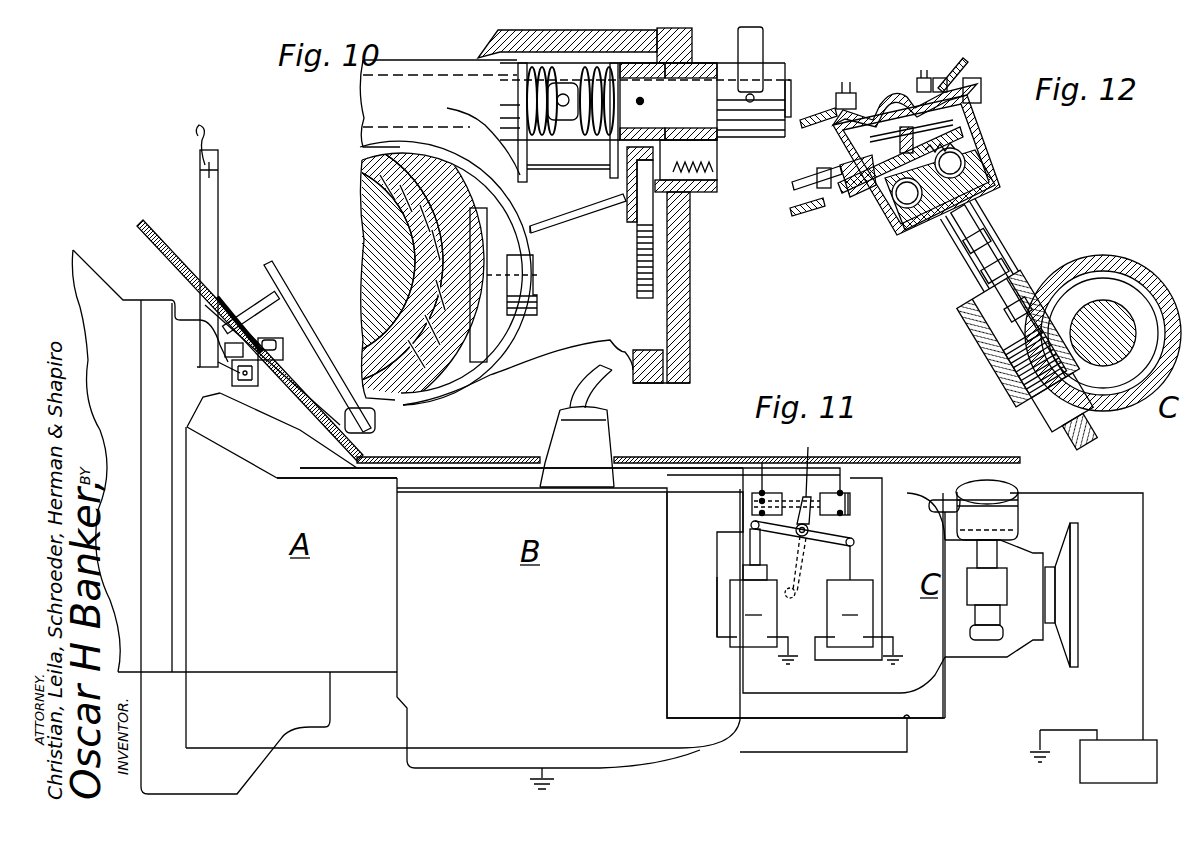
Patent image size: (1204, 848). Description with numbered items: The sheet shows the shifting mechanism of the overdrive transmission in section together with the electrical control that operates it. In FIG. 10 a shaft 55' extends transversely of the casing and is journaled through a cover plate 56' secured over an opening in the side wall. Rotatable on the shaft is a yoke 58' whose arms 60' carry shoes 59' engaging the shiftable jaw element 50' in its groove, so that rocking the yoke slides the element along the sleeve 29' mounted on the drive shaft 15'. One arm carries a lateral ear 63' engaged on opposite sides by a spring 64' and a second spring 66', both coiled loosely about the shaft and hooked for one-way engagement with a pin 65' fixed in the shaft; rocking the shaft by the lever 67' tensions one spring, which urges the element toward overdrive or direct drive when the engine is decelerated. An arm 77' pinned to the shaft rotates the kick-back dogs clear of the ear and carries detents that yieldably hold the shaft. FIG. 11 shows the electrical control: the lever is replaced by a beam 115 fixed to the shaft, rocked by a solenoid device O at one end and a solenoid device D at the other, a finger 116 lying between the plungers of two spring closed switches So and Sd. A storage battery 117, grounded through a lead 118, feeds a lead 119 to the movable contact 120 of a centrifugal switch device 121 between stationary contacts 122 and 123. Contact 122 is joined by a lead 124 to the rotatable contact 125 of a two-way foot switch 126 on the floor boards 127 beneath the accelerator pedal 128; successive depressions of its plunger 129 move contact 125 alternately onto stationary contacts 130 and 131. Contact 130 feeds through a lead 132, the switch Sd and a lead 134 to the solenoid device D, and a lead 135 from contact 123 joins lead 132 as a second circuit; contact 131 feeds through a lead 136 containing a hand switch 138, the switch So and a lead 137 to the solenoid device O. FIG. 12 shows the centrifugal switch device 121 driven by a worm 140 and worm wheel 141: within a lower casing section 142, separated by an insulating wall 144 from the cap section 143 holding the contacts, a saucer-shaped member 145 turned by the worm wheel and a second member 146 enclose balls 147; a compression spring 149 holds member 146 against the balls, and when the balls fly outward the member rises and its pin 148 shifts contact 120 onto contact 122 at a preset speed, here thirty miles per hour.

In FIG. 10, the yoke 58' is at (438, 90).
In FIG. 10, the spring 64' is at (552, 106).
In FIG. 10, the pin 65' is at (565, 86).
In FIG. 10, the second spring 66' is at (570, 116).
In FIG. 10, the lever 67' is at (768, 64).
In FIG. 10, the shaft 55' is at (645, 84).
In FIG. 10, the shiftable element 50' is at (315, 261).
In FIG. 10, the sleeve 29' is at (316, 261).
In FIG. 10, the drive shaft 15' is at (315, 261).
In FIG. 10, the arm 60' is at (471, 273).
In FIG. 10, the shoe 59' is at (512, 301).
In FIG. 10, the ear 63' is at (578, 217).
In FIG. 10, the arm 77' is at (624, 222).
In FIG. 10, the plate 56' is at (568, 272).
In FIG. 12, the worm 140 is at (1112, 278).
In FIG. 12, the worm wheel 141 is at (1017, 378).
In FIG. 12, the saucer-shaped member 145 is at (955, 240).
In FIG. 12, the centrifugal switch device 121 is at (1020, 177).
In FIG. 11, the centrifugal switch device 121 is at (1026, 525).
In FIG. 12, the balls 147 is at (985, 190).
In FIG. 12, the lower casing section 142 is at (995, 150).
In FIG. 12, the wall 144 is at (965, 126).
In FIG. 12, the compression spring 149 is at (975, 135).
In FIG. 12, the saucer-shaped member 146 is at (875, 215).
In FIG. 12, the movable contact 120 is at (888, 95).
In FIG. 11, the movable contact 120 is at (1000, 490).
In FIG. 12, the stationary contact 122 is at (848, 93).
In FIG. 12, the lead 119 is at (950, 66).
In FIG. 11, the lead 119 is at (1144, 586).
In FIG. 12, the cap section 143 is at (974, 78).
In FIG. 12, the stationary contact 123 is at (830, 180).
In FIG. 12, the pin 148 is at (868, 196).
In FIG. 11, the rotatable contact 125 is at (300, 371).
In FIG. 11, the floor boards 127 is at (443, 455).
In FIG. 11, the lead 136 is at (219, 225).
In FIG. 11, the hand switch 138 is at (207, 137).
In FIG. 11, the accelerator pedal 128 is at (282, 282).
In FIG. 11, the plunger 129 is at (285, 330).
In FIG. 11, the two-way foot switch 126 is at (300, 348).
In FIG. 11, the stationary contact 130 is at (227, 355).
In FIG. 11, the stationary contact 131 is at (252, 380).
In FIG. 11, the lead 132 is at (355, 480).
In FIG. 11, the spring closed switch Sd is at (750, 508).
In FIG. 11, the spring closed switch So is at (850, 508).
In FIG. 11, the finger 116 is at (808, 508).
In FIG. 11, the beam 115 is at (816, 545).
In FIG. 11, the solenoid device D is at (753, 613).
In FIG. 11, the solenoid device O is at (850, 613).
In FIG. 11, the lead 134 is at (717, 578).
In FIG. 11, the lead 137 is at (884, 553).
In FIG. 11, the lead 124 is at (542, 762).
In FIG. 11, the lead 135 is at (947, 694).
In FIG. 11, the lead 118 is at (1052, 729).
In FIG. 11, the storage battery 117 is at (1115, 745).